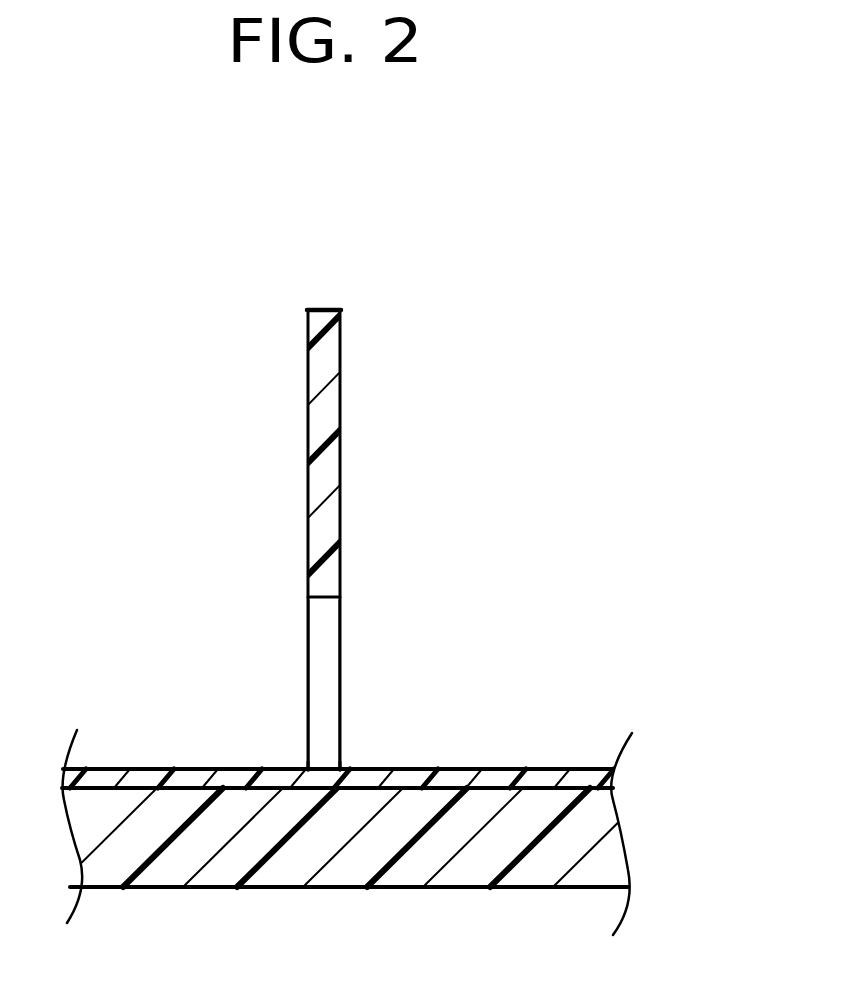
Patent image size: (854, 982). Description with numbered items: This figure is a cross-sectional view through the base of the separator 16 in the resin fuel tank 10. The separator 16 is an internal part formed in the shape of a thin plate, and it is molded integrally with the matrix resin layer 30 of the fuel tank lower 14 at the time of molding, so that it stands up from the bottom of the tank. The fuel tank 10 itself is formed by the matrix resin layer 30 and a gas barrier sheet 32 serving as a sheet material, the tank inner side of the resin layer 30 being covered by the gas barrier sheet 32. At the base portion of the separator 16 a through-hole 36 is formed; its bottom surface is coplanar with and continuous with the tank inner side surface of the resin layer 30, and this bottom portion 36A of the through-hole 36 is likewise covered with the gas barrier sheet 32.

The fuel tank 10 is at (551, 603).
The fuel tank lower 14 is at (622, 827).
The separator 16 is at (325, 308).
The matrix resin layer 30 is at (553, 856).
The gas barrier sheet 32 is at (522, 770).
The through-hole 36 is at (328, 614).
The bottom portion of through-hole 36A is at (323, 783).